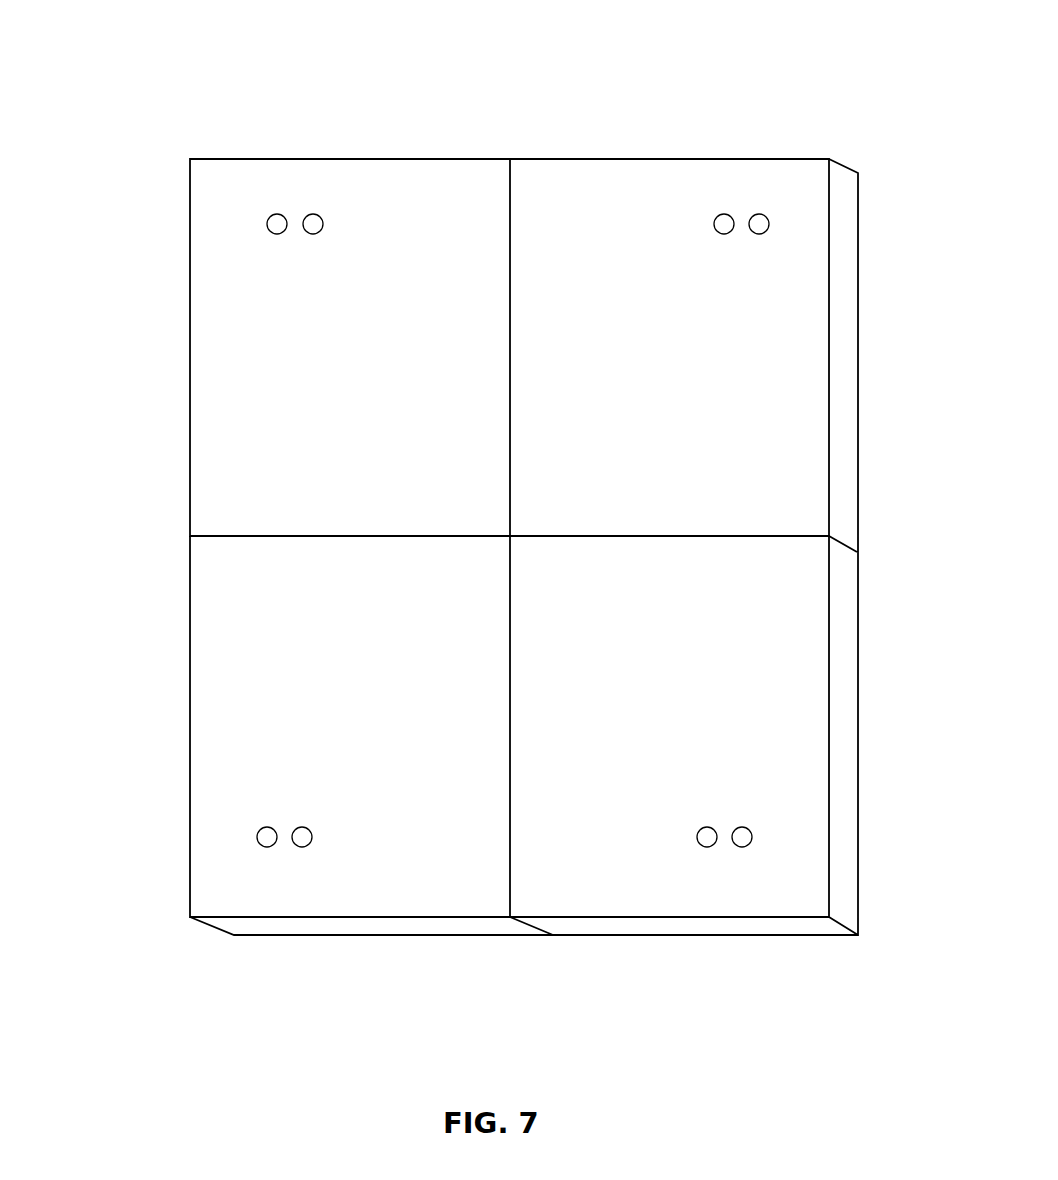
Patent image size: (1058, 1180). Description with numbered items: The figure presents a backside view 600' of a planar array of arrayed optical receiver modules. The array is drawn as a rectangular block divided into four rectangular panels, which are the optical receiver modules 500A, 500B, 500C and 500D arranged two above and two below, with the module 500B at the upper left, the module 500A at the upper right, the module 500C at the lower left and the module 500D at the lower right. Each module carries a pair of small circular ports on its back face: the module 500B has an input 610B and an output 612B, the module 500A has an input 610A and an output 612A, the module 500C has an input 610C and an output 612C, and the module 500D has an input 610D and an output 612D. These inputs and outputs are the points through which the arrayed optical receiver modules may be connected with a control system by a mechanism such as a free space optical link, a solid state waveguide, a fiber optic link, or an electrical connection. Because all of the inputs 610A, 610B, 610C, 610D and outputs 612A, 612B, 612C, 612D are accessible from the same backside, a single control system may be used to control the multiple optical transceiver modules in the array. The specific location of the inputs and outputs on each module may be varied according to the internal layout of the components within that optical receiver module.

The backside view 600' is at (454, 478).
The optical receiver module 500A is at (705, 158).
The optical receiver module 500B is at (350, 158).
The optical receiver module 500C is at (343, 935).
The optical receiver module 500D is at (838, 668).
The input 610A is at (722, 235).
The output 612A is at (759, 235).
The input 610B is at (275, 235).
The output 612B is at (313, 235).
The input 610C is at (263, 827).
The output 612C is at (301, 827).
The input 610D is at (703, 827).
The output 612D is at (741, 827).